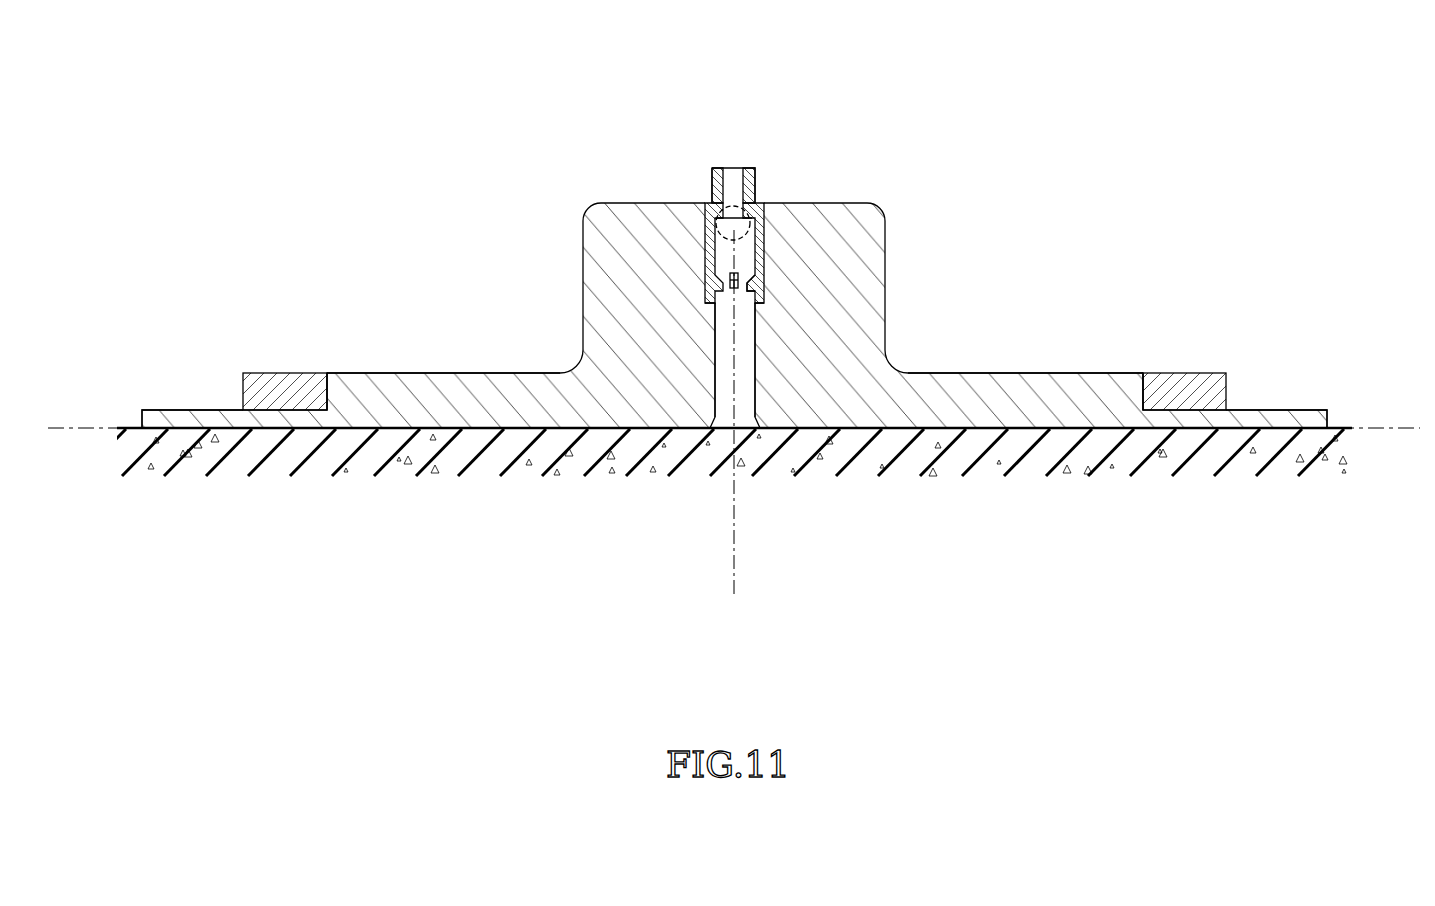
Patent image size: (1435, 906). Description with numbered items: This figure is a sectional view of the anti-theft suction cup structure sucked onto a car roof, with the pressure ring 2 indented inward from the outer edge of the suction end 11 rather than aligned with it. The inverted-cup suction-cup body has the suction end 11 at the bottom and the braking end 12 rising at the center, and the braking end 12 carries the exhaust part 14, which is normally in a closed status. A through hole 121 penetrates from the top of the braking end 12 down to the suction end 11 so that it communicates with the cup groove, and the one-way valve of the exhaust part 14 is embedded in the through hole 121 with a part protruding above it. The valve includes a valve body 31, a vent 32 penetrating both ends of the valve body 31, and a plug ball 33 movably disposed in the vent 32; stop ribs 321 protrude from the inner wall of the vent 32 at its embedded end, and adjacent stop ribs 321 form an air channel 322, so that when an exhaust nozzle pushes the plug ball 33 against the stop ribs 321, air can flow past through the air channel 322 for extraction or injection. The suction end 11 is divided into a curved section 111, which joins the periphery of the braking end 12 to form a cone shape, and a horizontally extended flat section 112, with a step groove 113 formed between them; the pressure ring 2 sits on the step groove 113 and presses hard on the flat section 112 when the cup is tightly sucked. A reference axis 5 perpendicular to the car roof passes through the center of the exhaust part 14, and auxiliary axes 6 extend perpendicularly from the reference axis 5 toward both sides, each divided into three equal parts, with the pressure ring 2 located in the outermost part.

The pressure ring 2 is at (298, 373).
The reference axis 5 is at (734, 540).
The auxiliary axis 6 is at (84, 428).
The suction end 11 is at (252, 568).
The curved section 111 is at (455, 397).
The flat section 112 is at (296, 420).
The step groove 113 is at (270, 412).
The braking end 12 is at (897, 317).
The through hole 121 is at (723, 343).
The exhaust part 14 is at (698, 190).
The valve body 31 is at (717, 170).
The vent 32 is at (740, 170).
The stop rib 321 is at (755, 295).
The air channel 322 is at (744, 288).
The plug ball 33 is at (727, 250).